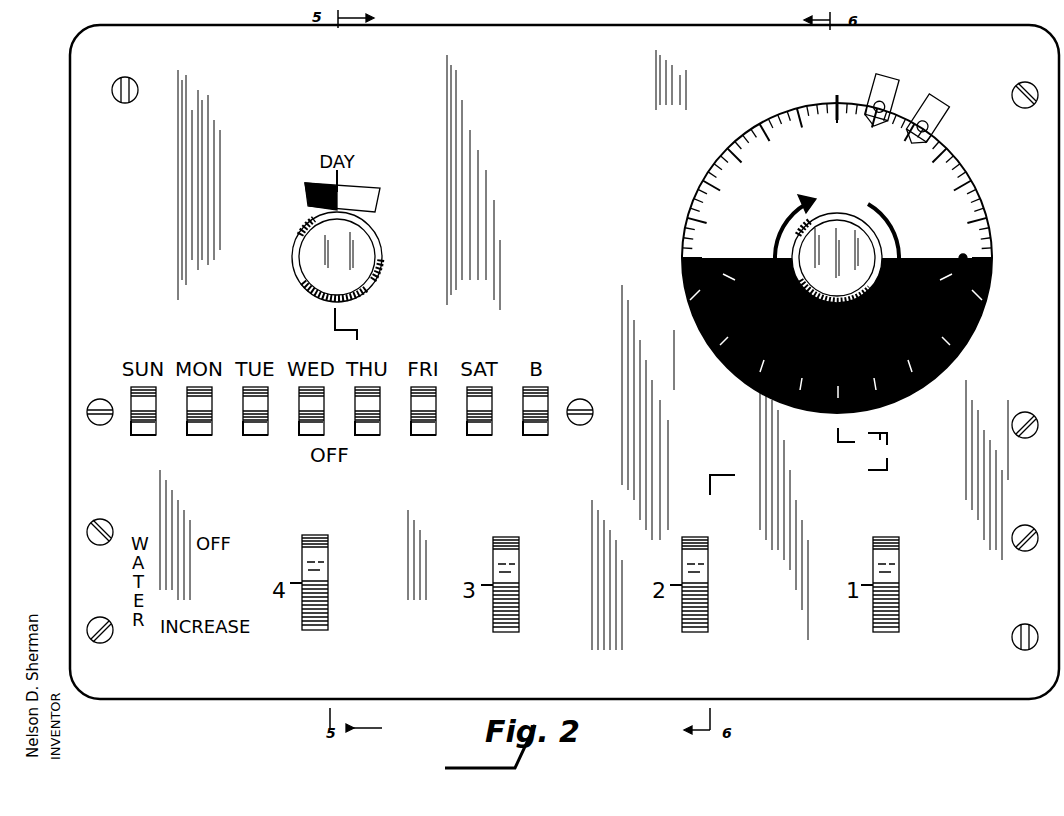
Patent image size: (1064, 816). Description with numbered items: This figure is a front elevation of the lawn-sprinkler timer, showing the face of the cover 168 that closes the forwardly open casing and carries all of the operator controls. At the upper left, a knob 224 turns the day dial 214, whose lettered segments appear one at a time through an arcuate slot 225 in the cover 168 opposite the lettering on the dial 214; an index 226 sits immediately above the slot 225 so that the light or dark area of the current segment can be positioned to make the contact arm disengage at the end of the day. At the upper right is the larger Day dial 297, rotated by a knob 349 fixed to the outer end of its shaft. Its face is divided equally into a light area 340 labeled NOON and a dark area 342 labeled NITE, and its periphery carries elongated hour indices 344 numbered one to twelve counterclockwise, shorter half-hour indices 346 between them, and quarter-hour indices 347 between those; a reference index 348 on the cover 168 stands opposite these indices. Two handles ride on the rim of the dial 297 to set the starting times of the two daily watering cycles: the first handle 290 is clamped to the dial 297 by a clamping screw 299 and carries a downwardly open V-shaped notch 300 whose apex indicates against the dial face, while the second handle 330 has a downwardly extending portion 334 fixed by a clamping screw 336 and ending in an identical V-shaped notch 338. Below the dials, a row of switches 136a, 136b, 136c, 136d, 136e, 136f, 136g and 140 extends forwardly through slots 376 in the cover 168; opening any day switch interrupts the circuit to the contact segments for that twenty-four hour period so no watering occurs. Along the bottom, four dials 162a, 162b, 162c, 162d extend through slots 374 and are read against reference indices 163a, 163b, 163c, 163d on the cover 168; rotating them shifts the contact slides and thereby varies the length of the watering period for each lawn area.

The cover 168 is at (102, 219).
The dial 214 is at (333, 191).
The knob 224 is at (380, 251).
The arcuate slot 225 is at (306, 185).
The index 226 is at (340, 174).
The handle 290 is at (870, 80).
The Day dial 297 is at (834, 240).
The clamping knob or screw 299 is at (886, 104).
The V-shaped notch 300 is at (882, 120).
The handle 330 is at (956, 104).
The downwardly extending portion 334 is at (950, 122).
The clamping screw 336 is at (960, 132).
The V-shaped notch 338 is at (914, 128).
The light area 340 is at (796, 416).
The dark area 342 is at (757, 126).
The hour indices 344 is at (980, 337).
The half-hour index 346 is at (980, 310).
The quarter-hour index 347 is at (990, 290).
The reference index 348 is at (837, 97).
The knob 349 is at (795, 240).
The switch 136a is at (130, 400).
The switch 136b is at (202, 436).
The switch 136c is at (252, 420).
The switch 136d is at (304, 420).
The switch 136e is at (368, 424).
The switch 136f is at (418, 410).
The switch 136g is at (486, 418).
The switch 140 is at (542, 398).
The slots 376 is at (131, 434).
The dial 162a is at (891, 580).
The dial 162b is at (697, 580).
The dial 162c is at (509, 580).
The dial 162d is at (325, 578).
The reference index 163a is at (862, 584).
The reference index 163b is at (670, 584).
The reference index 163c is at (482, 584).
The reference index 163d is at (290, 582).
The slots 374 is at (322, 569).